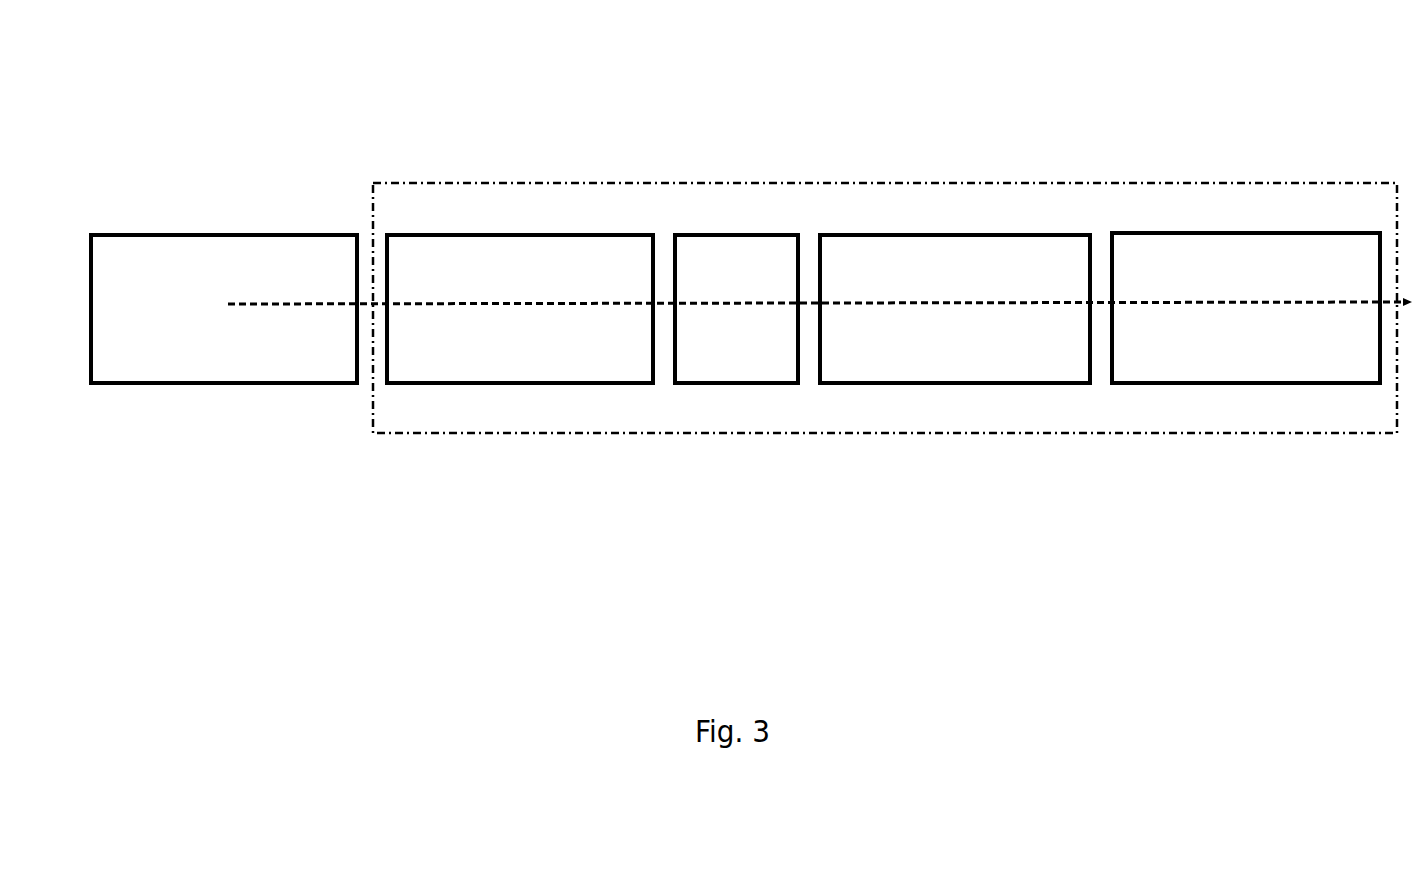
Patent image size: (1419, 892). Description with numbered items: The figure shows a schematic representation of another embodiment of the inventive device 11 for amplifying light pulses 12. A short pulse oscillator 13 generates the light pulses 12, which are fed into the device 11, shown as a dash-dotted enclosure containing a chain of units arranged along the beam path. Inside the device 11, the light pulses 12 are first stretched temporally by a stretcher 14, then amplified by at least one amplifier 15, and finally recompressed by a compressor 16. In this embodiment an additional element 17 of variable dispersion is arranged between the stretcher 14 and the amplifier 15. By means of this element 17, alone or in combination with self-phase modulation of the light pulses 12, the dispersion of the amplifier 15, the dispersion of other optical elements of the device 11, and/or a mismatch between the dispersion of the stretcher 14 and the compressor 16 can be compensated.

The device 11 is at (1000, 182).
The light pulses 12 is at (452, 305).
The short pulse oscillator 13 is at (272, 352).
The stretcher 14 is at (582, 337).
The amplifier 15 is at (1027, 355).
The compressor 16 is at (1183, 338).
The element of variable dispersion 17 is at (774, 352).